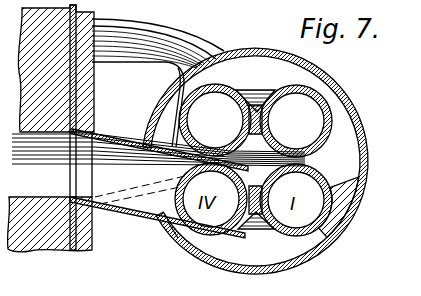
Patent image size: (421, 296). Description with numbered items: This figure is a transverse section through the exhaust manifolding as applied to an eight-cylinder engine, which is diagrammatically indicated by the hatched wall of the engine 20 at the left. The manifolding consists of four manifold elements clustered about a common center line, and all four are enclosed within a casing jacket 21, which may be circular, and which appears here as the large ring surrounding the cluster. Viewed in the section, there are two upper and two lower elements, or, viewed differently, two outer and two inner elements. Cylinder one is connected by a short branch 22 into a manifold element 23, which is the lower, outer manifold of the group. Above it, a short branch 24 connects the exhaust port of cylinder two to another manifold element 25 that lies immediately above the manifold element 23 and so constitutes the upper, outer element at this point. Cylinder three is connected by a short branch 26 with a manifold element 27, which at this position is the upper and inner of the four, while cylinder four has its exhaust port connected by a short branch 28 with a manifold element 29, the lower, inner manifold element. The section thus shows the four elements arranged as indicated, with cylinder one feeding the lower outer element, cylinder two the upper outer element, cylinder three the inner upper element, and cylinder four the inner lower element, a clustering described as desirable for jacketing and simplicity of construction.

The engine 20 is at (25, 250).
The casing jacket 21 is at (253, 49).
The short branch 22 is at (254, 228).
The manifold element 23 is at (327, 220).
The short branch 24 is at (257, 92).
The manifold element 25 is at (321, 100).
The short branch 26 is at (148, 128).
The manifold element 27 is at (214, 85).
The short branch 28 is at (134, 214).
The manifold element 29 is at (208, 238).